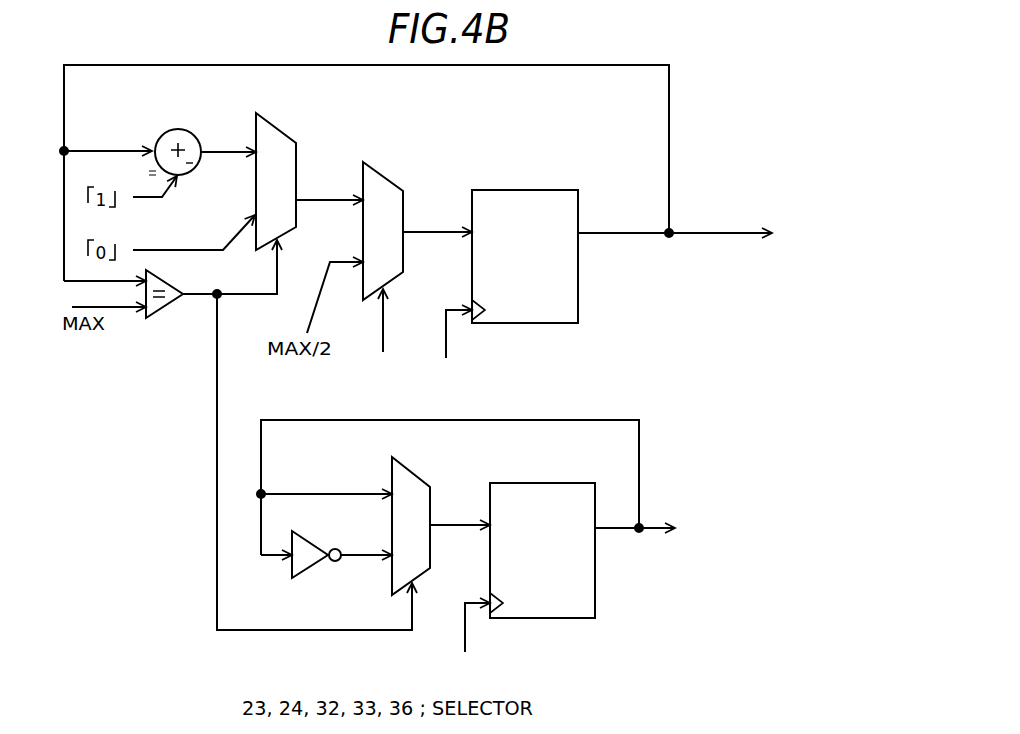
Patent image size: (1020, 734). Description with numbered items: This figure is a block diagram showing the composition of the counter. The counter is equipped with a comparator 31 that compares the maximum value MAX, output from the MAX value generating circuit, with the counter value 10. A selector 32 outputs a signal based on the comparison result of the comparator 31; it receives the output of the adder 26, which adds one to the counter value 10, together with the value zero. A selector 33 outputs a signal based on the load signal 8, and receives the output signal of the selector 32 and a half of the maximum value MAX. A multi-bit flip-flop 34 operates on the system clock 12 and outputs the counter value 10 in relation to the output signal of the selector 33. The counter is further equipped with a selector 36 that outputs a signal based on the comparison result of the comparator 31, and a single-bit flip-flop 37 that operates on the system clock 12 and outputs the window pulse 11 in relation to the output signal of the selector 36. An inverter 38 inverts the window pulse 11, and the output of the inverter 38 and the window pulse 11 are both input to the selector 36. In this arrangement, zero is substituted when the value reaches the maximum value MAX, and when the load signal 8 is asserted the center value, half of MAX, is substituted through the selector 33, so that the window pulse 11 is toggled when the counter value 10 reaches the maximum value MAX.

The load signal 8 is at (383, 352).
The counter value 10 is at (713, 233).
The window pulse 11 is at (651, 532).
The system clock 12 is at (446, 312).
The adder 26 is at (178, 129).
The comparator 31 is at (161, 318).
The selector 32 is at (287, 136).
The selector 33 is at (393, 184).
The multi-bit flip-flop 34 is at (556, 190).
The selector 36 is at (422, 478).
The 1-bit flip-flop 37 is at (595, 608).
The inverter 38 is at (313, 564).